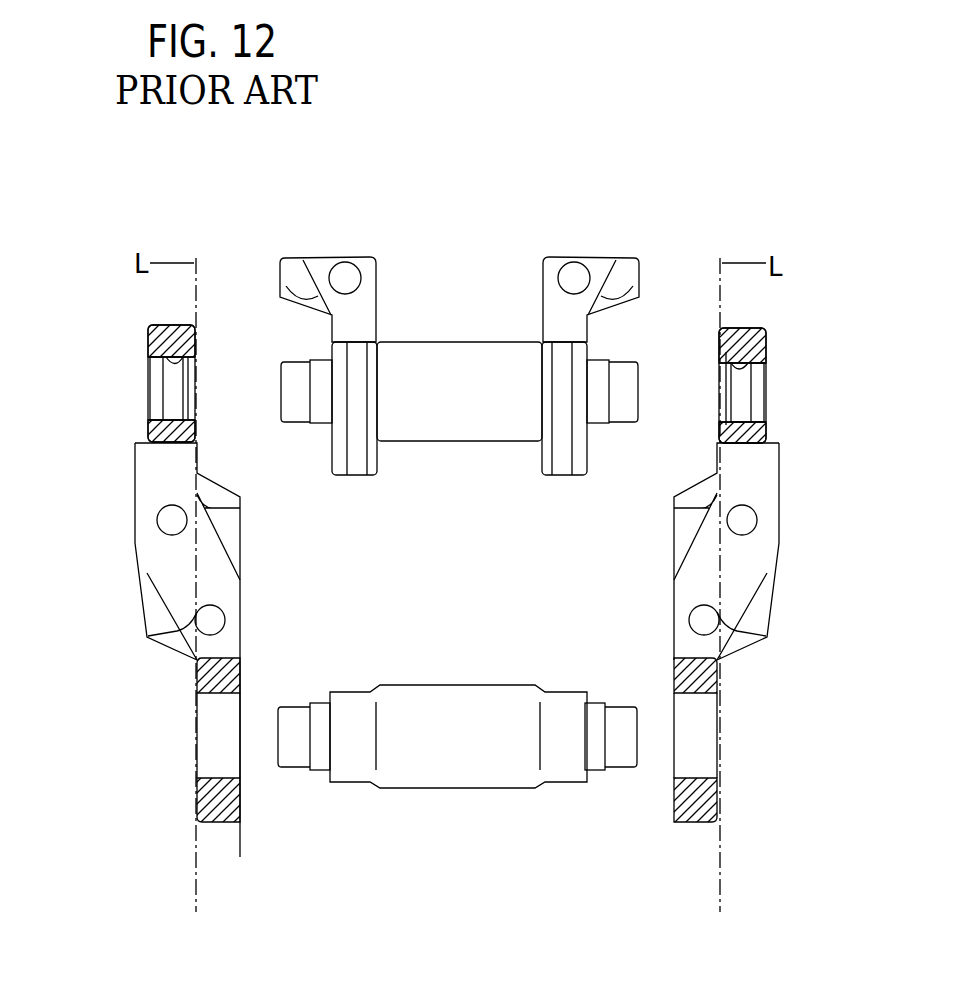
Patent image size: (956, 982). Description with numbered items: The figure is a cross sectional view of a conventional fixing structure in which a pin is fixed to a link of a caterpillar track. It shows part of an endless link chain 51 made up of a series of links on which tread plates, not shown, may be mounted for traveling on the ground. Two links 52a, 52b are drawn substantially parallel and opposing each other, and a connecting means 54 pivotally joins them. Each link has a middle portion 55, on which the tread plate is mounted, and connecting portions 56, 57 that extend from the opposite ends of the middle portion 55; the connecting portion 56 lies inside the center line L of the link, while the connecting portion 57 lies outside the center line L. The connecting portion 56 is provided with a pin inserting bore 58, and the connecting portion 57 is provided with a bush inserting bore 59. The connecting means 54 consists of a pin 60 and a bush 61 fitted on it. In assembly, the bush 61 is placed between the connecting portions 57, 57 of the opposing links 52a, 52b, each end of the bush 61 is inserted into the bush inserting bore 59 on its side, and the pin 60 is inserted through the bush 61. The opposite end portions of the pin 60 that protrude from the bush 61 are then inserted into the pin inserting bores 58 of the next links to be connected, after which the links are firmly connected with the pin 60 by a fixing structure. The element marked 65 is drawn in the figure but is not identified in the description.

The link chain 51 is at (190, 760).
The link 52a is at (198, 822).
The link 52b is at (675, 822).
The connecting means 54 is at (423, 334).
The middle portion 55 is at (135, 527).
The connecting portion 56 is at (147, 342).
The connecting portion 57 is at (249, 778).
The pin inserting bore 58 is at (184, 363).
The bush inserting bore 59 is at (198, 694).
The pin 60 is at (284, 425).
The bush 61 is at (509, 338).
The bracket 65 is at (308, 360).